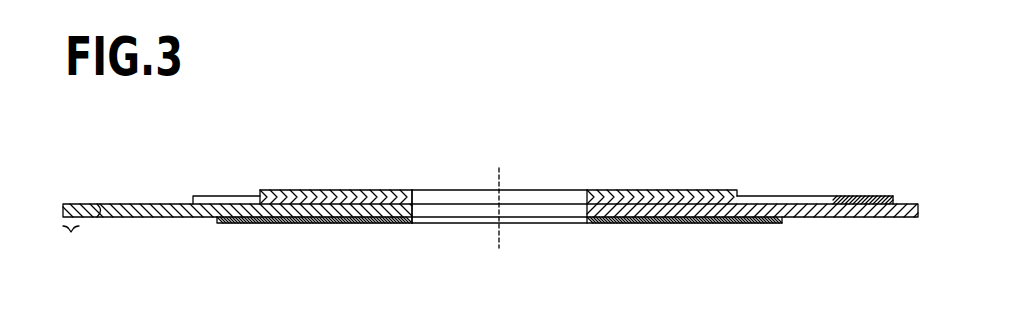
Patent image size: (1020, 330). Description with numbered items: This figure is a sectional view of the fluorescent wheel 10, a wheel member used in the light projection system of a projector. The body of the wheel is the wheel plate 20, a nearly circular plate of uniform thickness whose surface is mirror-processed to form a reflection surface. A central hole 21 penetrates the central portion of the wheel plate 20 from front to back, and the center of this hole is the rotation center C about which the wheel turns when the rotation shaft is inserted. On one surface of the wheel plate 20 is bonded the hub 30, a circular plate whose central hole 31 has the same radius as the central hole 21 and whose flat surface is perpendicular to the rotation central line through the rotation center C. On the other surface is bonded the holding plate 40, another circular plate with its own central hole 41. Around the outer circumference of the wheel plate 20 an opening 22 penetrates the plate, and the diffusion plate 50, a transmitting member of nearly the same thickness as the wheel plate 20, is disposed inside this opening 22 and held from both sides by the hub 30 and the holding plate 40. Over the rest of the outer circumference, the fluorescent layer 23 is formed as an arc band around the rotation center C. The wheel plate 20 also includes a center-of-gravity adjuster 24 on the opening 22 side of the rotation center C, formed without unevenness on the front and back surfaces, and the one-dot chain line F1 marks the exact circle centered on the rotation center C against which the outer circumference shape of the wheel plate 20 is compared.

The fluorescent wheel 10 is at (732, 97).
The wheel plate 20 is at (840, 217).
The central hole 21 is at (413, 210).
The opening 22 is at (102, 218).
The fluorescent layer 23 is at (213, 197).
The center-of-gravity adjuster 24 is at (74, 243).
The hub 30 is at (298, 190).
The central hole 31 is at (420, 197).
The holding plate 40 is at (317, 225).
The central hole 41 is at (412, 219).
The diffusion plate 50 is at (157, 218).
The one-dot chain line F1 is at (78, 212).
The rotation center C is at (502, 238).